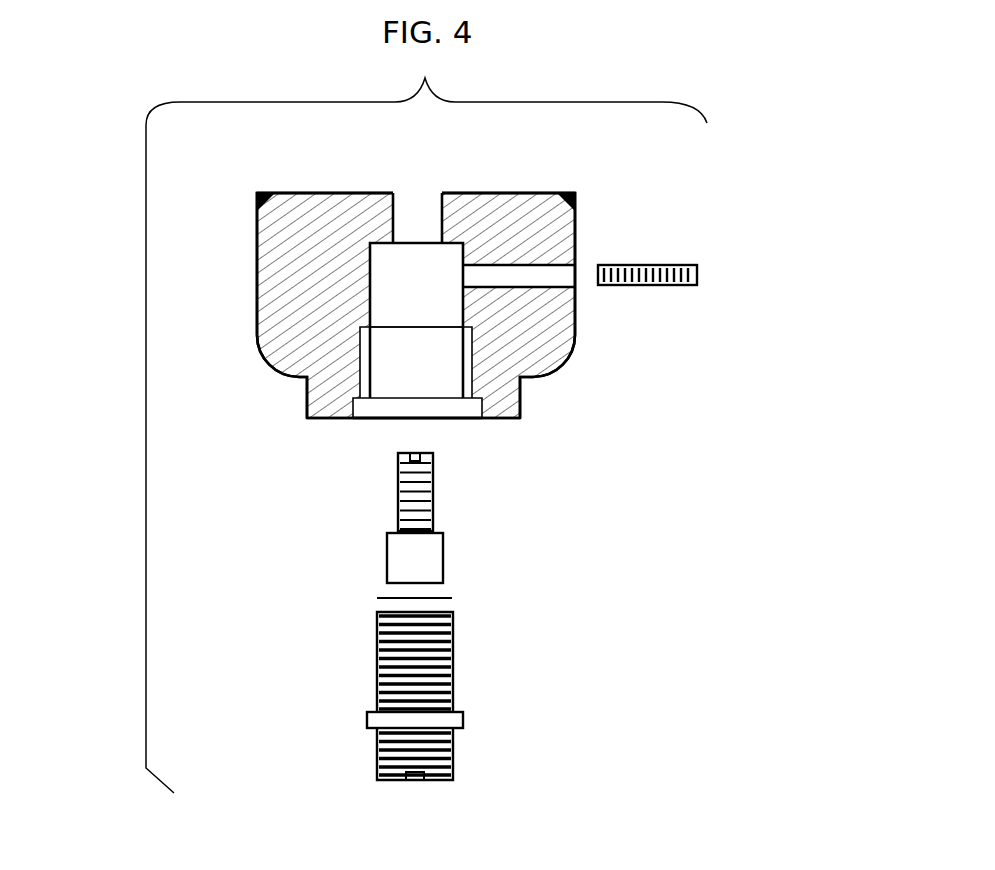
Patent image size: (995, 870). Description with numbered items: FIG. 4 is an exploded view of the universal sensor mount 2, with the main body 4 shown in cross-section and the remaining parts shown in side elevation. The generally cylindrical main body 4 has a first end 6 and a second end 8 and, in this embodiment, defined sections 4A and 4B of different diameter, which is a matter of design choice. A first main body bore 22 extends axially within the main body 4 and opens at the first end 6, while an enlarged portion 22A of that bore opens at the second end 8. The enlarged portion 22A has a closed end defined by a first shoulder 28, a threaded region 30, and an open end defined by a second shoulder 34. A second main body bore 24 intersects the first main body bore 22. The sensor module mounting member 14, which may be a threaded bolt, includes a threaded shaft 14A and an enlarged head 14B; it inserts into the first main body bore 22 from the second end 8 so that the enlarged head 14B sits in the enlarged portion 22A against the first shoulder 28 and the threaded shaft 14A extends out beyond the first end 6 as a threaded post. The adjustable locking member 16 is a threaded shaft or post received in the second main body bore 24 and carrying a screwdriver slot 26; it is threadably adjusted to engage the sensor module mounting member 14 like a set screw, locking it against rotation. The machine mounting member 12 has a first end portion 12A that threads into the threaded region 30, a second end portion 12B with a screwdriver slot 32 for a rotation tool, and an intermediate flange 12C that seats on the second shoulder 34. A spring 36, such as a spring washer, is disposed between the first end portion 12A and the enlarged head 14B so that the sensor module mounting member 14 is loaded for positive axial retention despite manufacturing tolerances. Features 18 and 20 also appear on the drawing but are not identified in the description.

The universal sensor mount 2 is at (98, 246).
The main body 4 is at (255, 368).
The first section of main body 4A is at (257, 267).
The second section of main body 4B is at (520, 390).
The first end of main body 6 is at (320, 193).
The second end of main body 8 is at (513, 419).
The machine mounting member 12 is at (384, 719).
The first end portion of machine mounting member 12A is at (455, 660).
The second end portion of machine mounting member 12B is at (455, 760).
The intermediate flange 12C is at (465, 722).
The sensor module mounting member 14 is at (374, 505).
The threaded shaft 14A is at (434, 469).
The enlarged head 14B is at (444, 557).
The adjustable locking member 16 is at (643, 265).
The tip of screw 18 is at (413, 455).
The chamfer 20 is at (565, 193).
The first main body bore 22 is at (397, 212).
The enlarged portion of first main body bore 22A is at (463, 297).
The second main body bore 24 is at (525, 267).
The screwdriver slot 26 is at (697, 270).
The first shoulder 28 is at (458, 248).
The threaded region 30 is at (372, 340).
The screwdriver slot 32 is at (422, 781).
The second shoulder 34 is at (463, 410).
The spring 36 is at (452, 599).